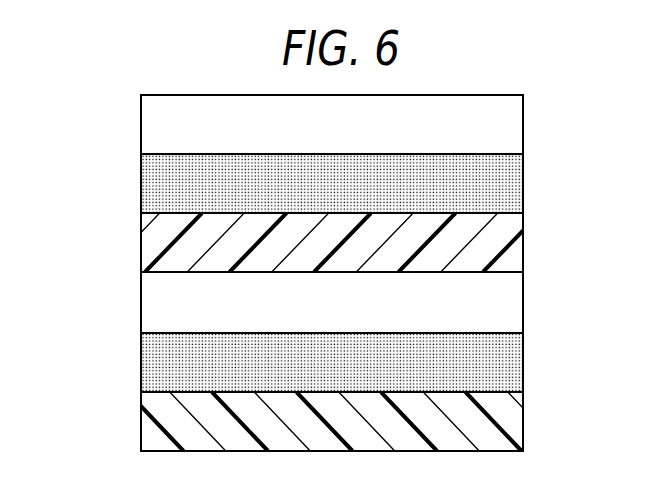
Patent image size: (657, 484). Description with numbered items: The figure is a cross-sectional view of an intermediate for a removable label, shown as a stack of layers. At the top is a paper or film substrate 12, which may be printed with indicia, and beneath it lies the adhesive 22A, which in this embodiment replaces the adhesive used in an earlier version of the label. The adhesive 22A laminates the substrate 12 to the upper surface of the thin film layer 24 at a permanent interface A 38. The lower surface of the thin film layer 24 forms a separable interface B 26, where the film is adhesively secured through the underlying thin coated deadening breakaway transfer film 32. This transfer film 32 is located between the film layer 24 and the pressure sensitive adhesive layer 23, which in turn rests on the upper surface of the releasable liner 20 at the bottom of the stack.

The paper or film substrate 12 is at (141, 131).
The adhesive 22A is at (141, 186).
The thin film layer 24 is at (141, 236).
The permanent interface A 38 is at (523, 213).
The separable interface B 26 is at (523, 272).
The deadening breakaway transfer film 32 is at (141, 298).
The pressure sensitive adhesive layer 23 is at (141, 361).
The releasable liner 20 is at (141, 413).